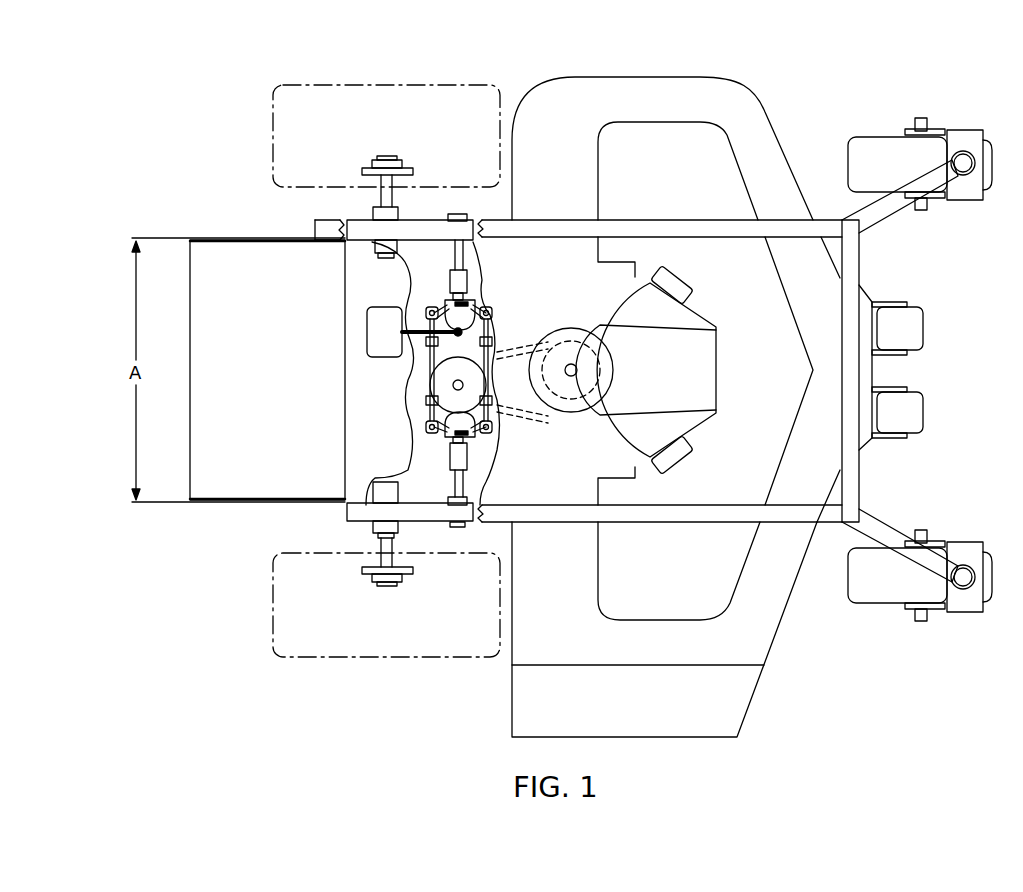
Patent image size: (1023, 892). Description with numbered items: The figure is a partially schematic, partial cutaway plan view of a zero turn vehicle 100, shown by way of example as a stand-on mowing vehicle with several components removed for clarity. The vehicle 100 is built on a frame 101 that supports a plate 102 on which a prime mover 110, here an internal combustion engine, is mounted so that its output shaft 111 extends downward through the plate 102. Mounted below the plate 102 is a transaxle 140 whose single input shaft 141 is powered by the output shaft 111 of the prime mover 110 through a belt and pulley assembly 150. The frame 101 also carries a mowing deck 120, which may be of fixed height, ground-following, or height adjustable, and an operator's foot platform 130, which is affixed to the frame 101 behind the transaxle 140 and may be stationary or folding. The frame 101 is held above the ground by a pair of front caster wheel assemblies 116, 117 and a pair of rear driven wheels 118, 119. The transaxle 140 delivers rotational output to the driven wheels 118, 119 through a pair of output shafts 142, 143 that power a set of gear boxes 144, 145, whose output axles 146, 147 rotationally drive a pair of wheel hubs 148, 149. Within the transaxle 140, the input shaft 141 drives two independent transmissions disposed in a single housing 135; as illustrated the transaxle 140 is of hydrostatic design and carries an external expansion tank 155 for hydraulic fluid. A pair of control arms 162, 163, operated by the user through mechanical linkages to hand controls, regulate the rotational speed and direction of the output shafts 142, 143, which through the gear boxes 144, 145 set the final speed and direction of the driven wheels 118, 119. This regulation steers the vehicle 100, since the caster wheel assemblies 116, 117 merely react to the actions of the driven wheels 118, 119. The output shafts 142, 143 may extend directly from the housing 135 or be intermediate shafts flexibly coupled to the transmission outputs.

The zero turn vehicle 100 is at (100, 88).
The frame 101 is at (676, 218).
The plate 102 is at (574, 269).
The prime mover 110 is at (685, 392).
The output shaft 111 is at (578, 372).
The caster wheel assembly 116 is at (880, 138).
The caster wheel assembly 117 is at (880, 606).
The driven wheel 118 is at (273, 95).
The driven wheel 119 is at (273, 650).
The mowing deck 120 is at (574, 582).
The operator's foot platform 130 is at (284, 381).
The housing 135 is at (484, 307).
The transaxle 140 is at (493, 443).
The input shaft 141 is at (454, 386).
The output shaft 142 is at (465, 258).
The output shaft 143 is at (465, 488).
The gear box 144 is at (356, 220).
The gear box 145 is at (356, 521).
The output axle 146 is at (395, 194).
The output axle 147 is at (393, 548).
The wheel hub 148 is at (372, 165).
The wheel hub 149 is at (372, 578).
The belt and pulley assembly 150 is at (440, 392).
The external expansion tank 155 is at (367, 332).
The control arm 162 is at (447, 300).
The control arm 163 is at (458, 437).